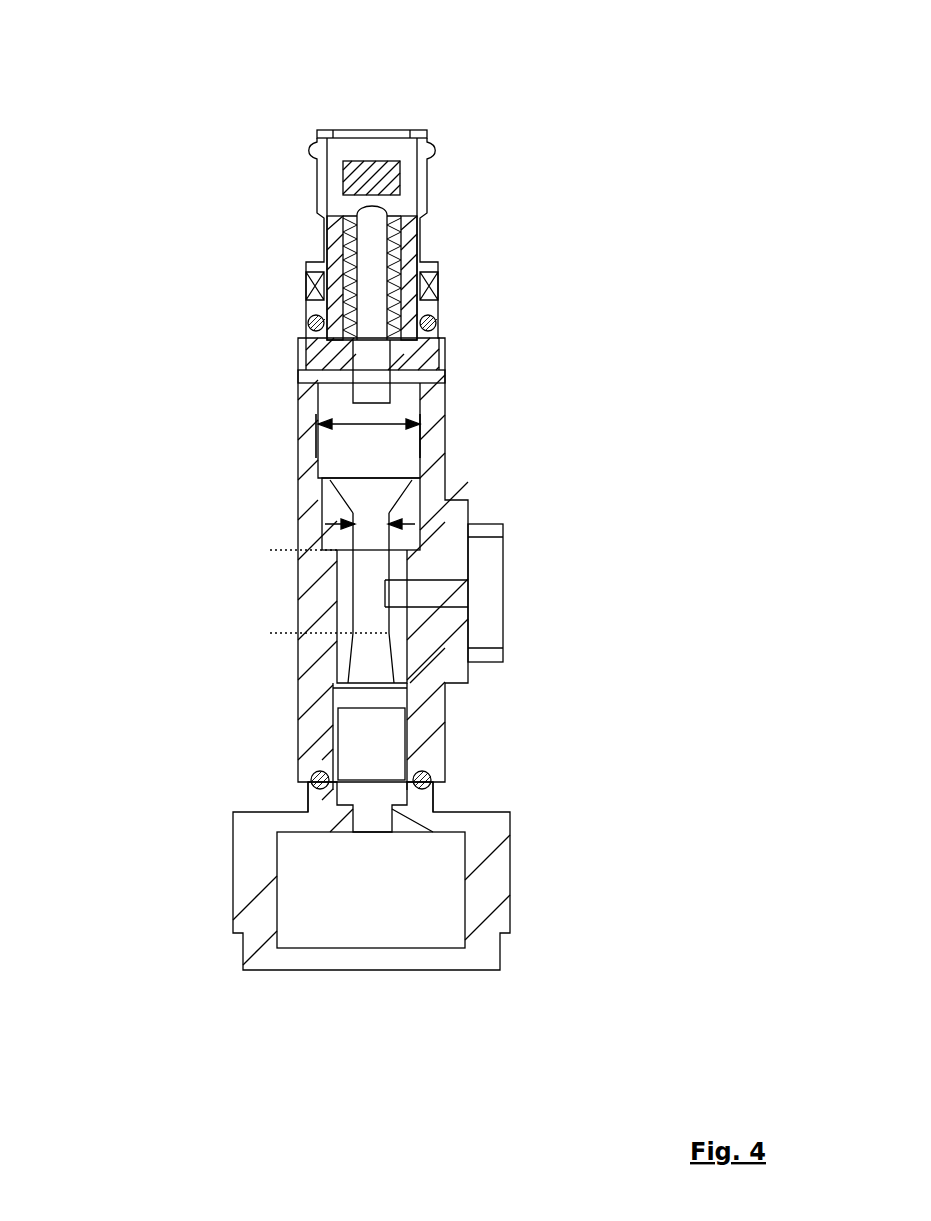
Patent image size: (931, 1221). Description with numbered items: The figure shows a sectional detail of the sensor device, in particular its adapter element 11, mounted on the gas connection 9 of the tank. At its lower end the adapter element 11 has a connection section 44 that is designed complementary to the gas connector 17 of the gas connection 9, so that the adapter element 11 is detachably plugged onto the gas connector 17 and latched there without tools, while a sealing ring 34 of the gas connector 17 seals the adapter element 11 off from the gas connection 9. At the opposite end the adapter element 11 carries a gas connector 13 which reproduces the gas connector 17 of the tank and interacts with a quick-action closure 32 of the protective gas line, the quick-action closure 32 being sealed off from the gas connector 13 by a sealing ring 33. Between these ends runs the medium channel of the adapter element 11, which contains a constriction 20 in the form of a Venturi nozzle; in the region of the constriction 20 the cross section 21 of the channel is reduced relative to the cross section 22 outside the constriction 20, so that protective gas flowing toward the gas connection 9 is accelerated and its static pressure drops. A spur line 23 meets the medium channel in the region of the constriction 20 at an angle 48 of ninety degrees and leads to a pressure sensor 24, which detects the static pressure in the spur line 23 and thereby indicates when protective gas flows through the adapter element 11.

The gas connection 9 is at (522, 878).
The adapter element 11 is at (176, 268).
The gas connector 13 is at (308, 280).
The gas connector 17 is at (316, 758).
The constriction 20 is at (258, 550).
The cross section 21 is at (360, 520).
The cross section 22 is at (348, 425).
The spur line 23 is at (437, 595).
The pressure sensor 24 is at (493, 590).
The quick-action closure 32 is at (415, 130).
The sealing ring 33 is at (425, 322).
The sealing ring 34 is at (318, 790).
The connection section 44 is at (453, 685).
The angle 48 is at (414, 625).